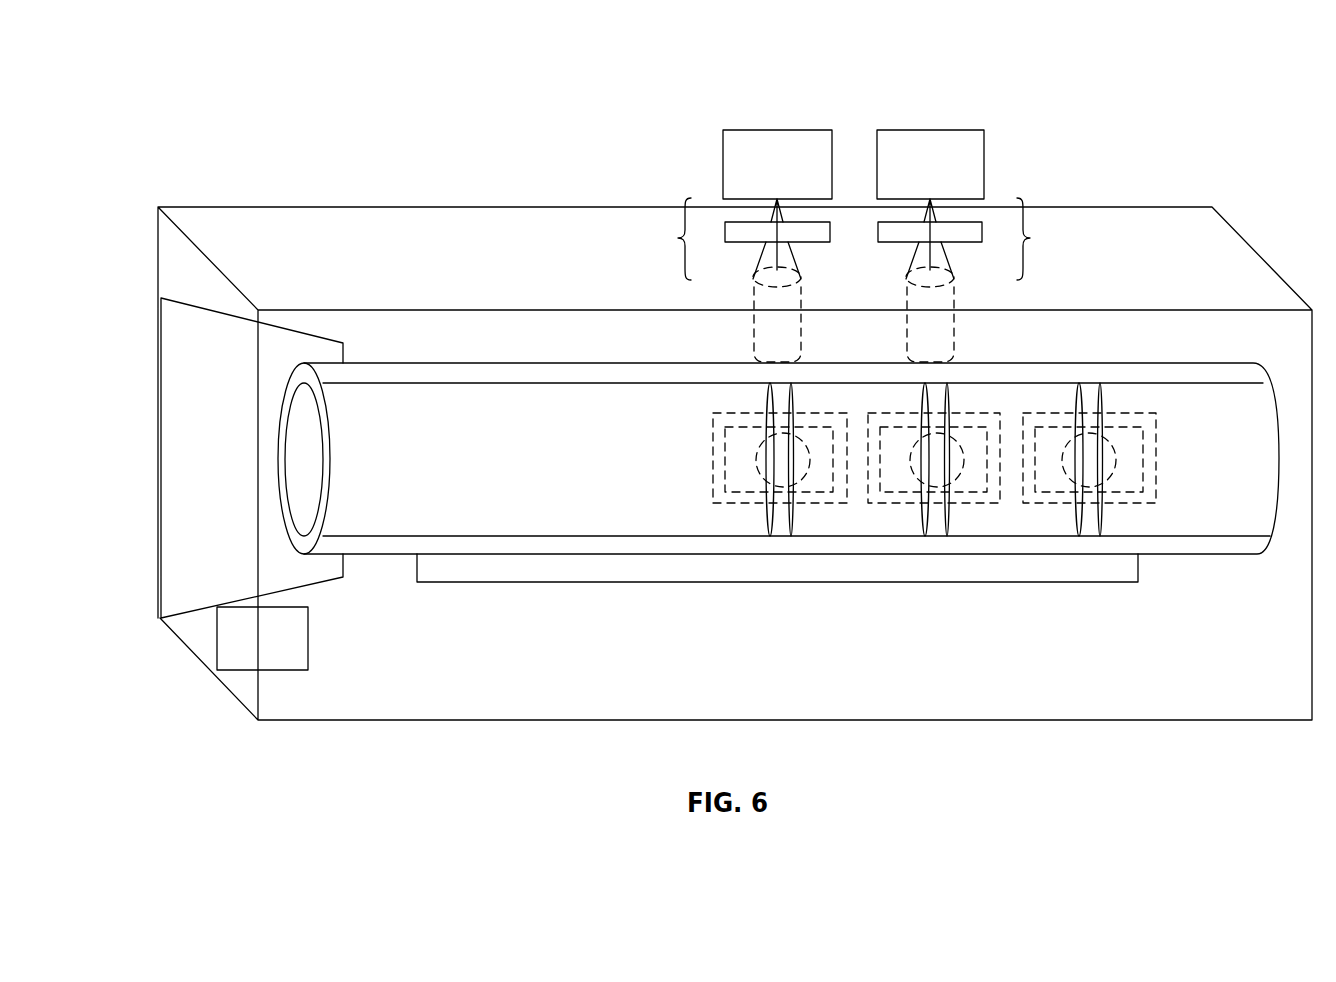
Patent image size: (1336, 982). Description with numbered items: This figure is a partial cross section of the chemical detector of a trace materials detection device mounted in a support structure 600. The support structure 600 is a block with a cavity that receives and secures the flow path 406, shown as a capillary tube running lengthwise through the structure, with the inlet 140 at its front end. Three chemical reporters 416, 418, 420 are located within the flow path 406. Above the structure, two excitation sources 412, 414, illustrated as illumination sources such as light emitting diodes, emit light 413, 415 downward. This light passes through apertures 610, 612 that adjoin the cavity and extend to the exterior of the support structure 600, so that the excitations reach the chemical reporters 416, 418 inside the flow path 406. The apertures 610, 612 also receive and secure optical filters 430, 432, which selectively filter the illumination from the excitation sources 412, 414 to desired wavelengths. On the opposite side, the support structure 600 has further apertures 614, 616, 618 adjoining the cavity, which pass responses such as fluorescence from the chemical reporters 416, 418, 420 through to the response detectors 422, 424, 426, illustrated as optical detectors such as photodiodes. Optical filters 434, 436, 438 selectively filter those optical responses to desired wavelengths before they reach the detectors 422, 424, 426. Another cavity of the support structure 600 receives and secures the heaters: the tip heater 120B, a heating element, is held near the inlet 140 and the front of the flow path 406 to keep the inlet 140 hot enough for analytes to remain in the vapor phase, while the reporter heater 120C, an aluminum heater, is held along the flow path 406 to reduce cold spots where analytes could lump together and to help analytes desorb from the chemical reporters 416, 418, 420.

The support structure 600 is at (368, 228).
The inlet 140 is at (182, 440).
The tip heater 120B is at (213, 638).
The reporter heater 120C is at (501, 567).
The flow path 406 is at (428, 363).
The excitation source 412 is at (780, 130).
The excitation source 414 is at (930, 130).
The light 413 is at (657, 239).
The light 415 is at (1050, 239).
The optical filter 430 is at (732, 243).
The optical filter 432 is at (972, 243).
The aperture 610 is at (757, 327).
The aperture 612 is at (953, 327).
The optical filter 434 is at (713, 483).
The optical filter 436 is at (890, 413).
The optical filter 438 is at (1156, 457).
The aperture 614 is at (755, 458).
The aperture 616 is at (963, 440).
The aperture 618 is at (1117, 458).
The response detector 422 is at (737, 490).
The chemical reporter 416 is at (782, 523).
The response detector 424 is at (890, 490).
The chemical reporter 418 is at (935, 523).
The response detector 426 is at (1045, 490).
The chemical reporter 420 is at (1085, 523).